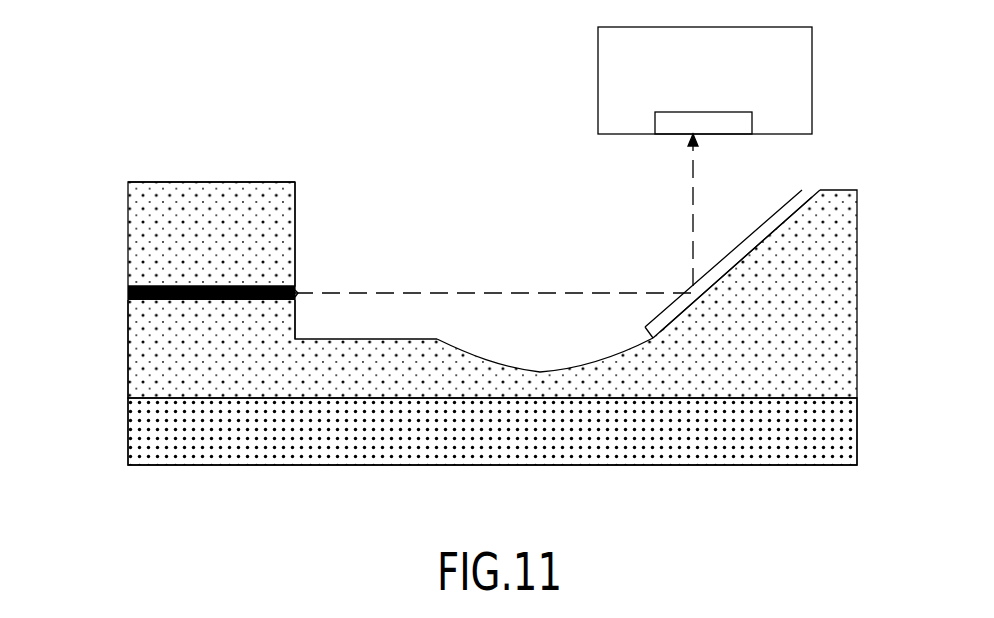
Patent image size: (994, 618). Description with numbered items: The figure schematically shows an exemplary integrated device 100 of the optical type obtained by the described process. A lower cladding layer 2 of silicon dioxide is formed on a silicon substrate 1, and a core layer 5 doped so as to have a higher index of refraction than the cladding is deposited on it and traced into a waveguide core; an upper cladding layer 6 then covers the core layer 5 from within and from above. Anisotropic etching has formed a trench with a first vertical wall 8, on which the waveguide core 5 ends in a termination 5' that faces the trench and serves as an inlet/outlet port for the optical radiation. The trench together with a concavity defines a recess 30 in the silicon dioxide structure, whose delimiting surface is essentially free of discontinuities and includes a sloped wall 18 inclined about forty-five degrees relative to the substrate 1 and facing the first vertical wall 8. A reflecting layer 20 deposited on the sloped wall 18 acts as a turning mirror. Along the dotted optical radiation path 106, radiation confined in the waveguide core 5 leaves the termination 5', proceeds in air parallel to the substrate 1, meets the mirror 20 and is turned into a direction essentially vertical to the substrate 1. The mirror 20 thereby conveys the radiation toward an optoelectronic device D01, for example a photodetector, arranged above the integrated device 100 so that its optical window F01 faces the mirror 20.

The integrated device 100 is at (202, 172).
The upper cladding layer 6 is at (140, 228).
The core layer 5 is at (176, 290).
The termination 5' is at (346, 310).
The lower cladding layer 2 is at (150, 358).
The silicon substrate 1 is at (150, 432).
The first vertical wall 8 is at (296, 235).
The optical radiation path 106 is at (400, 292).
The recess 30 is at (513, 266).
The reflecting layer 20 is at (745, 248).
The sloped wall 18 is at (722, 290).
The optoelectronic device D01 is at (705, 80).
The optical window F01 is at (737, 122).